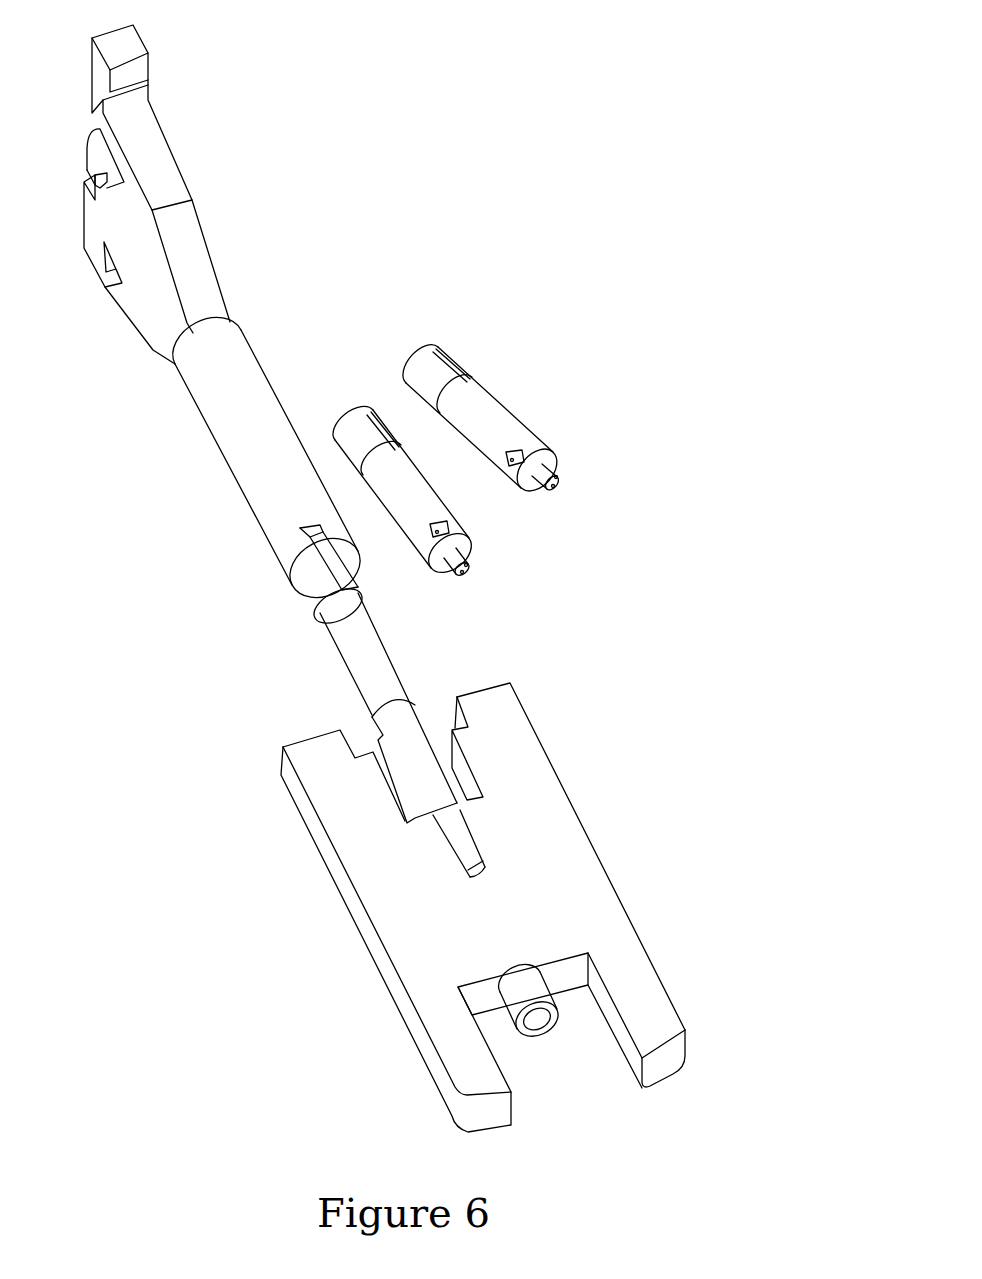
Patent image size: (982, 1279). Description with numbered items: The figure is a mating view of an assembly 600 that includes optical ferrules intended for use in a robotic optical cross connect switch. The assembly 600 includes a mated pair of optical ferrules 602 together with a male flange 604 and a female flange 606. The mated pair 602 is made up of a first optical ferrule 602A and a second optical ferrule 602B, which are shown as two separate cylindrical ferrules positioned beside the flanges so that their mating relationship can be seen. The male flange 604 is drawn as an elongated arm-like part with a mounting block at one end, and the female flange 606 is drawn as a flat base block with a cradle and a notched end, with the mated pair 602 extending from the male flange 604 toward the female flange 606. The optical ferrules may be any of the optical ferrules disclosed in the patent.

The assembly 600 is at (553, 78).
The mated pair of optical ferrules 602 is at (385, 680).
The first optical ferrule 602A is at (485, 415).
The second optical ferrule 602B is at (432, 510).
The male flange 604 is at (170, 177).
The female flange 606 is at (551, 830).